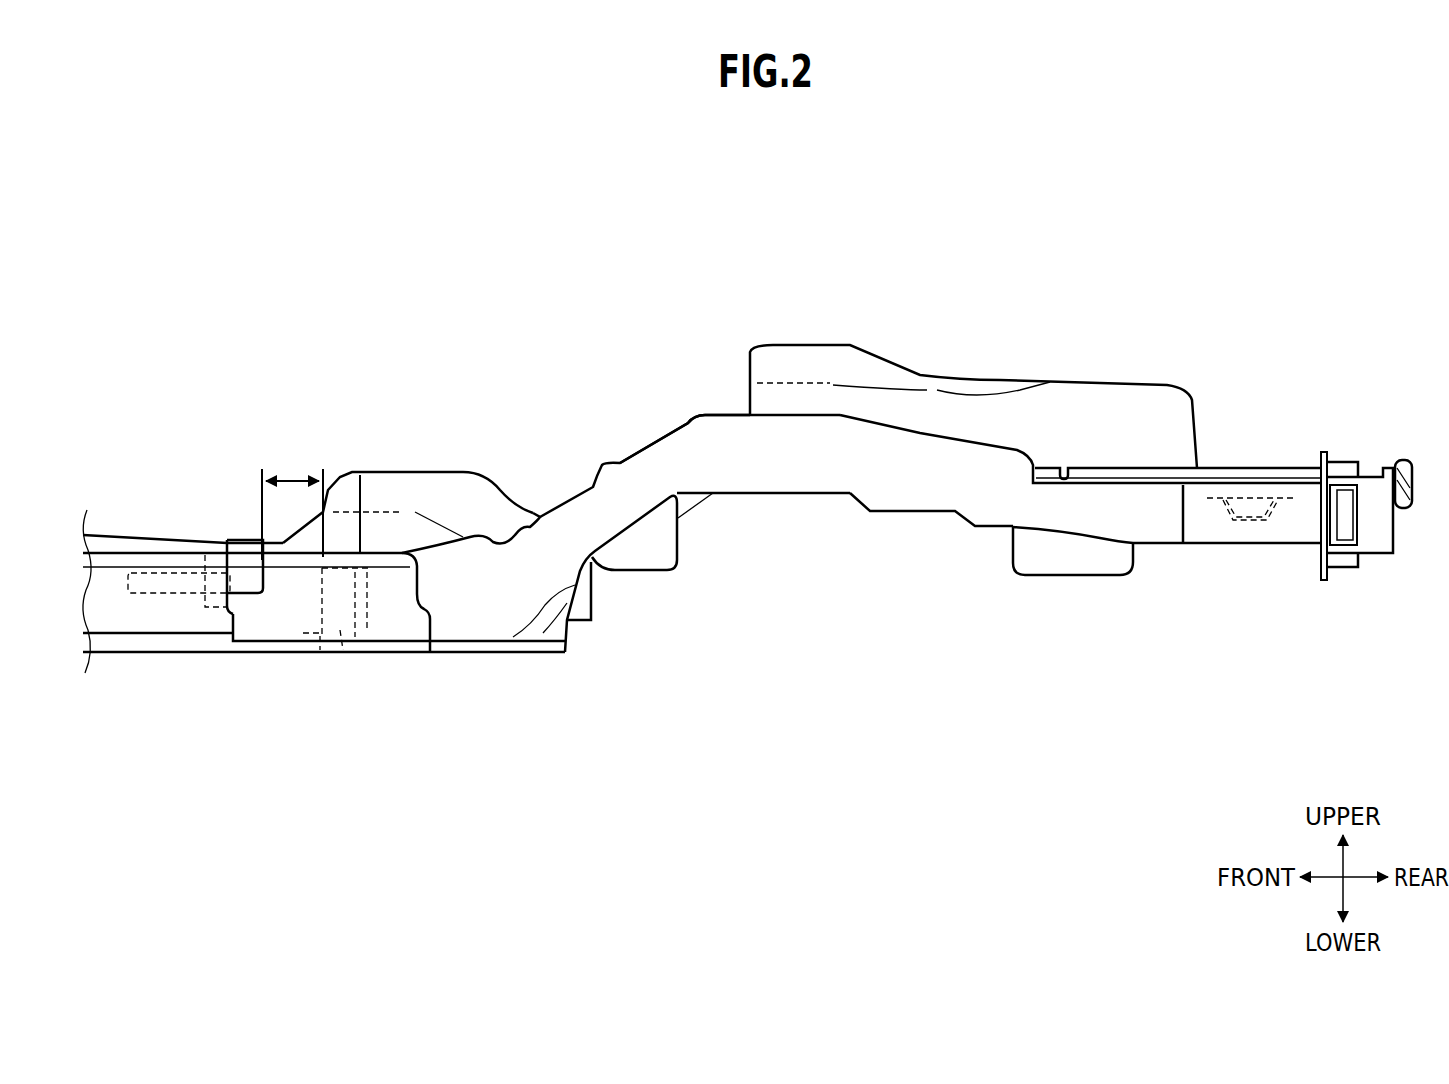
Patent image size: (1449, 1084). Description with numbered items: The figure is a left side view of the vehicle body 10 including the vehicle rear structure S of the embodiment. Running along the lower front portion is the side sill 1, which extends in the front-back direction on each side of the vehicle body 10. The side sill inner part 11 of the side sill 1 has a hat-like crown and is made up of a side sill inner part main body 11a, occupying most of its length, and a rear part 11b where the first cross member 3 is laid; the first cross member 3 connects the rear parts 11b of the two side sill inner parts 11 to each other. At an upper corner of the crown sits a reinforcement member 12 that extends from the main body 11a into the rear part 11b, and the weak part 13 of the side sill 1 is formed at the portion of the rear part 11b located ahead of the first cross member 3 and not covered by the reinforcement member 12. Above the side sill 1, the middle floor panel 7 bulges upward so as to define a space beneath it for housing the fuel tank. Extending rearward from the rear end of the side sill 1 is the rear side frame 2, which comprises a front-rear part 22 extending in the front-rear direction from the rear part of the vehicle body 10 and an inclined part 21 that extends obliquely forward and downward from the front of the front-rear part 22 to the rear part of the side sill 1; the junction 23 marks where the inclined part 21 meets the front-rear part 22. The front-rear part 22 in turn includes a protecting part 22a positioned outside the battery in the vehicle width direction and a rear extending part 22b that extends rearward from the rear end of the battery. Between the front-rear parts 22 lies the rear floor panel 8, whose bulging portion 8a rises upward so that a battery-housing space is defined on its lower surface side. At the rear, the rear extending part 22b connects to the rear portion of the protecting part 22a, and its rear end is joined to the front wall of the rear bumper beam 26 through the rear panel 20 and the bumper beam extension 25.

The vehicle rear structure S is at (1180, 330).
The side sill 1 is at (380, 612).
The side sill inner part 11 is at (380, 612).
The side sill inner part main body 11a is at (150, 653).
The rear part of the side sill inner part 11b is at (407, 653).
The reinforcement member 12 is at (247, 577).
The weak part 13 is at (292, 478).
The first cross member 3 is at (338, 647).
The middle floor panel 7 is at (443, 468).
The rear side frame 2 is at (931, 448).
The inclined part 21 is at (613, 478).
The front-rear part 22 is at (948, 450).
The protecting part 22a is at (933, 502).
The rear extending part 22b is at (1245, 537).
The junction 23 is at (694, 410).
The rear floor panel 8 is at (973, 363).
The bulging portion 8a is at (815, 345).
The rear panel 20 is at (1320, 462).
The bumper beam extension 25 is at (1341, 462).
The rear bumper beam 26 is at (1386, 470).
The vehicle body 10 is at (1396, 533).